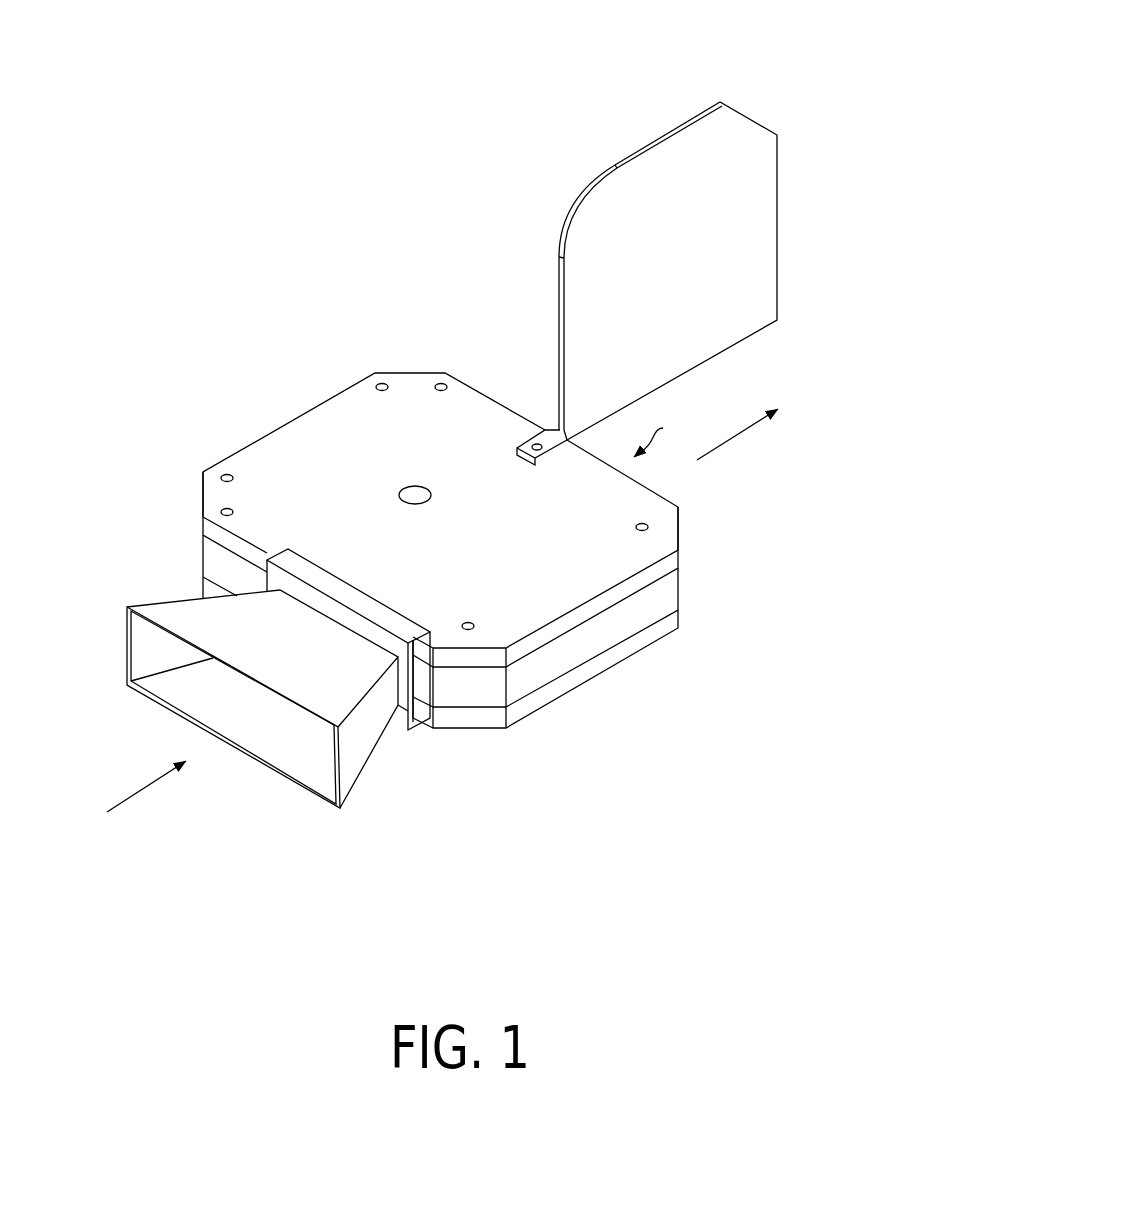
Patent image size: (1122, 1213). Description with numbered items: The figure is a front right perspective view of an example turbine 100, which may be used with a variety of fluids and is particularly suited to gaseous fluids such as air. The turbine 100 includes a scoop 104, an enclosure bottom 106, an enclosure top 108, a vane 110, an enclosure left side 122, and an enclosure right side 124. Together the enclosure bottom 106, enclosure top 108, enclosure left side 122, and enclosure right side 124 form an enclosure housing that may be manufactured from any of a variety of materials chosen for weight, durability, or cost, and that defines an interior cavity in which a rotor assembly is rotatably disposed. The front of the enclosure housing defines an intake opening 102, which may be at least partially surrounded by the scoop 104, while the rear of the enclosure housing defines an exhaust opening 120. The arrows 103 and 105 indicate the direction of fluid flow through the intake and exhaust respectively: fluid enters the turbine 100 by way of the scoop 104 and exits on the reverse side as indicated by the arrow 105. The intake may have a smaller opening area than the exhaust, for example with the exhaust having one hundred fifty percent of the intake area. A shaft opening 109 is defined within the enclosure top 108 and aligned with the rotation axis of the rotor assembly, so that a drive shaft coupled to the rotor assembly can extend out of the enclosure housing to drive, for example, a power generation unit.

The turbine 100 is at (840, 51).
The intake opening 102 is at (272, 786).
The arrow 103 is at (135, 801).
The scoop 104 is at (127, 607).
The arrow 105 is at (727, 449).
The enclosure bottom 106 is at (679, 616).
The enclosure top 108 is at (407, 372).
The shaft opening 109 is at (388, 489).
The vane 110 is at (777, 233).
The exhaust opening 120 is at (666, 435).
The enclosure left side 122 is at (203, 560).
The enclosure right side 124 is at (679, 582).